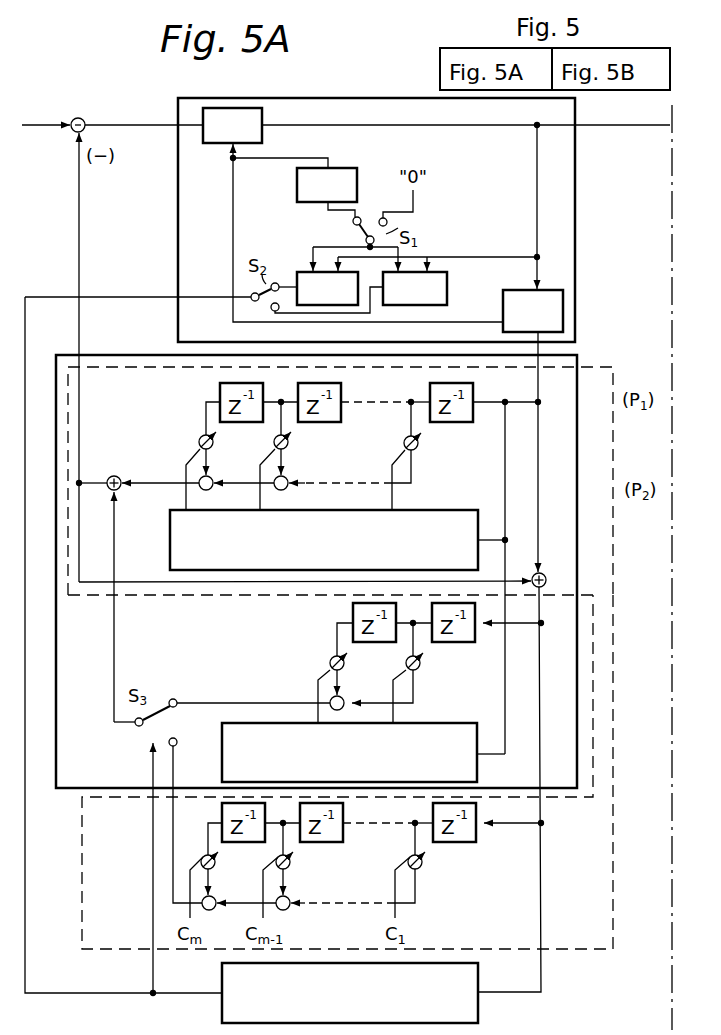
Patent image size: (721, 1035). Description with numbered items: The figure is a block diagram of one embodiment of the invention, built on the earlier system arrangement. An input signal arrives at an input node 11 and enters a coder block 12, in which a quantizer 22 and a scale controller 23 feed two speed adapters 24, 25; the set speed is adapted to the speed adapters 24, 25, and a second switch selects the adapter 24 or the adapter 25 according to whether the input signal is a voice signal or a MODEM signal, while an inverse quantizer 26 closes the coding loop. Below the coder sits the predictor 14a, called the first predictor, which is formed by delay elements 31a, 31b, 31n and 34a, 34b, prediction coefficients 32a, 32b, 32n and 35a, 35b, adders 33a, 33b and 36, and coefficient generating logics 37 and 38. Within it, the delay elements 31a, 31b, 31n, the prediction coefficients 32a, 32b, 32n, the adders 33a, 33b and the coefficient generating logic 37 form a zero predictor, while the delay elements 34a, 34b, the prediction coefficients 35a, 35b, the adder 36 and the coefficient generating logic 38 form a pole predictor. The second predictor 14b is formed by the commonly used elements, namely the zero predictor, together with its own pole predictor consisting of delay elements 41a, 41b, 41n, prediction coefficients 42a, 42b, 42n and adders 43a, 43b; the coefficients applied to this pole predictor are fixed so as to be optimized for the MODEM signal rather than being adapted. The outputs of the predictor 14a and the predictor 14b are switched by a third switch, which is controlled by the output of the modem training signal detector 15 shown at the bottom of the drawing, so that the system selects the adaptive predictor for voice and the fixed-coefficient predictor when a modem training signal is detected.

The subtractor 11 is at (78, 118).
The ADPCM coder 12 is at (576, 222).
The predictor 14a is at (577, 396).
The predictor 14b is at (613, 476).
The modem training signal detector 15 is at (222, 1014).
The quantizer 22 is at (236, 143).
The scale controller 23 is at (349, 168).
The speed adapter 24 is at (303, 272).
The speed adapter 25 is at (447, 284).
The inverse quantizer 26 is at (503, 310).
The delay element 31a is at (220, 393).
The delay element 31b is at (330, 422).
The delay element 31n is at (462, 422).
The prediction coefficient 32a is at (198, 438).
The prediction coefficient 32b is at (287, 448).
The prediction coefficient 32n is at (417, 449).
The adder 33a is at (211, 489).
The adder 33b is at (286, 489).
The delay element 34a is at (353, 613).
The delay element 34b is at (464, 642).
The prediction coefficient 35a is at (330, 660).
The prediction coefficient 35b is at (418, 670).
The adder 36 is at (342, 698).
The coefficient generating logic 37 is at (458, 511).
The coefficient generating logic 38 is at (478, 769).
The delay element 41a is at (222, 813).
The delay element 41b is at (343, 841).
The delay element 41n is at (466, 842).
The prediction coefficient 42a is at (215, 869).
The prediction coefficient 42b is at (290, 869).
The prediction coefficient 42n is at (421, 870).
The adder 43a is at (220, 890).
The adder 43b is at (290, 898).